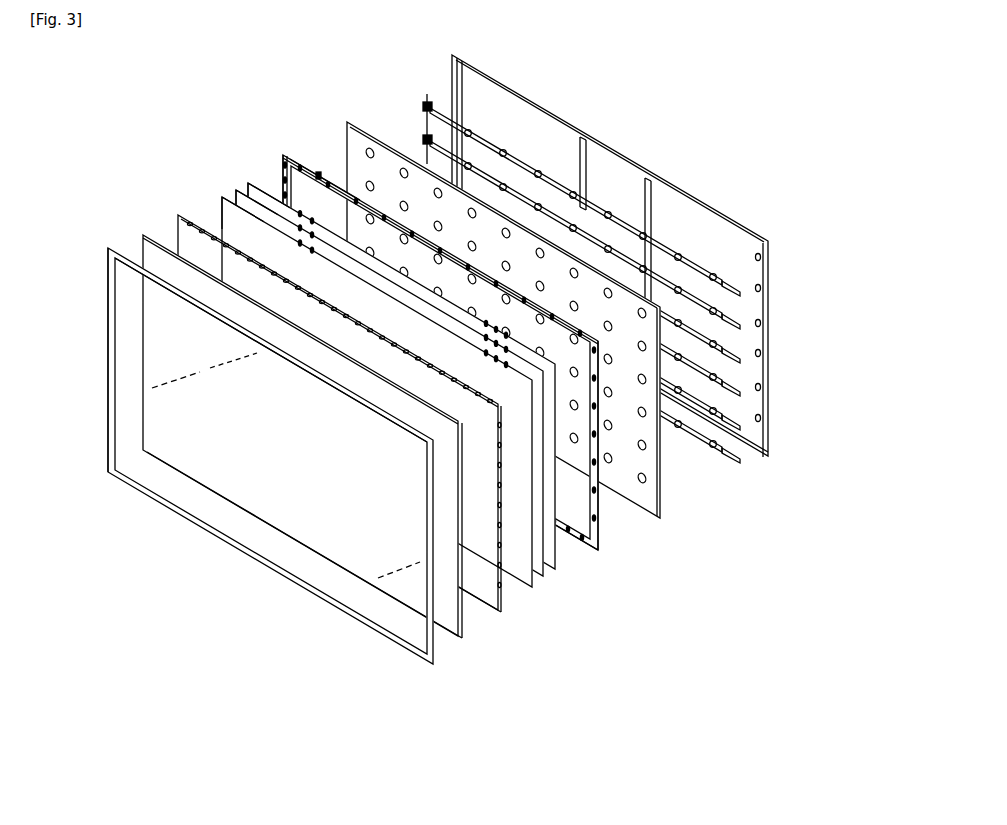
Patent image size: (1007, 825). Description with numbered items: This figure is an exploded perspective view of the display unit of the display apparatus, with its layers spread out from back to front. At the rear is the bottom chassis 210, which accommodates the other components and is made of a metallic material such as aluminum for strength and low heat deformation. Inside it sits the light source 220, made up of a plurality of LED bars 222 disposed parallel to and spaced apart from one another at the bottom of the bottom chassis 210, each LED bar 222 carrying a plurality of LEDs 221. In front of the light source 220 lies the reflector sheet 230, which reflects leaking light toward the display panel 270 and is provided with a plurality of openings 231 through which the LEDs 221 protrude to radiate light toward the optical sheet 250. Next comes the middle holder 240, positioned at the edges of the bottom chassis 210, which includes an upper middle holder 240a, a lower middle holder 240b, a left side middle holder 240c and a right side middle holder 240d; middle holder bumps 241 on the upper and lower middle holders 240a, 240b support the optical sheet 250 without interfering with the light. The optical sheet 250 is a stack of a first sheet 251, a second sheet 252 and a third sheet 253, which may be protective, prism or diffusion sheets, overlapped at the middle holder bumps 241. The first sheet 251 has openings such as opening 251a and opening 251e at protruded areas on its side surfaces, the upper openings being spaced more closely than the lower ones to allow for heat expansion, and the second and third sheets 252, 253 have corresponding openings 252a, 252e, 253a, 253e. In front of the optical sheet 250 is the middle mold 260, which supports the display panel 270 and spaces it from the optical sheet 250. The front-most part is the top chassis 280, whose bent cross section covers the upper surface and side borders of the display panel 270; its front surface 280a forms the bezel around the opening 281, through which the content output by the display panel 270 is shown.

The bottom chassis 210 is at (752, 362).
The light source 220 is at (619, 273).
The LED 221 is at (503, 149).
The LED bar 222 is at (722, 283).
The reflector sheet 230 is at (539, 319).
The opening 231 is at (403, 168).
The middle holder 240 is at (482, 342).
The upper middle holder 240a is at (300, 166).
The lower middle holder 240b is at (574, 546).
The left side middle holder 240c is at (283, 170).
The right side middle holder 240d is at (599, 529).
The middle holder bump 241 is at (318, 171).
The optical sheet 250 is at (400, 397).
The first sheet 251 is at (415, 368).
The opening 251a is at (277, 199).
The opening 251e is at (520, 342).
The second sheet 252 is at (387, 393).
The opening 252a is at (235, 190).
The second optical sheet protrusion 252e is at (493, 351).
The third sheet 253 is at (372, 416).
The opening 253a is at (221, 198).
The third optical sheet protrusion 253e is at (497, 361).
The middle mold 260 is at (498, 611).
The display panel 270 is at (459, 633).
The top chassis 280 is at (266, 475).
The front surface 280a is at (108, 356).
The opening 281 is at (185, 496).